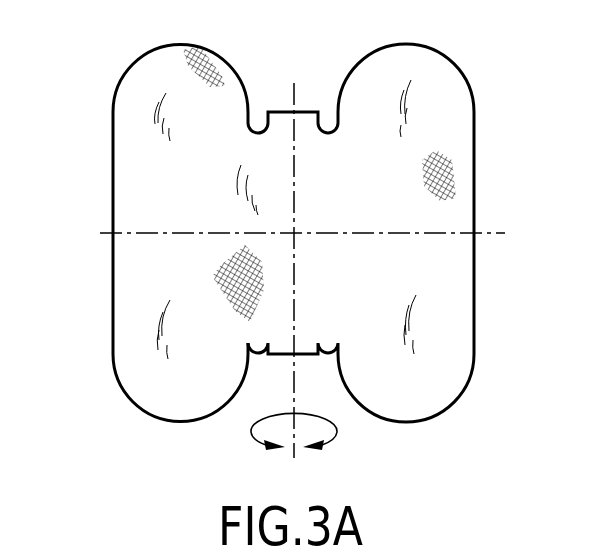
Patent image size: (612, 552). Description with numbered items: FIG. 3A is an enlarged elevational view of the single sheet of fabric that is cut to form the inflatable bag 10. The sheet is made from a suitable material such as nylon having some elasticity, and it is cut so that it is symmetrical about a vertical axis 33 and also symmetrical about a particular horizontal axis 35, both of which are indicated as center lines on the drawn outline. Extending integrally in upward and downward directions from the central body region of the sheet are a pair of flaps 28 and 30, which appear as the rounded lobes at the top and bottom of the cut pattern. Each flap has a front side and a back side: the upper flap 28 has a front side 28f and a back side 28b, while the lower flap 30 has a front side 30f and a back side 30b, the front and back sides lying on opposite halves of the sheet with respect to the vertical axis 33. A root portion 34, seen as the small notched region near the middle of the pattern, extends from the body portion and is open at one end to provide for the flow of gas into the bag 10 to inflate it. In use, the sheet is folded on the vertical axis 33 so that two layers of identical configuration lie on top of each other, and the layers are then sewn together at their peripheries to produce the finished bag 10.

The inflatable bag 10 is at (291, 241).
The flap 28 is at (291, 128).
The back side of flap 28b is at (128, 95).
The front side of flap 28f is at (448, 90).
The flap 30 is at (287, 329).
The back side of flap 30b is at (122, 352).
The front side of flap 30f is at (465, 305).
The vertical axis 33 is at (292, 90).
The root portion 34 is at (307, 117).
The horizontal axis 35 is at (490, 236).